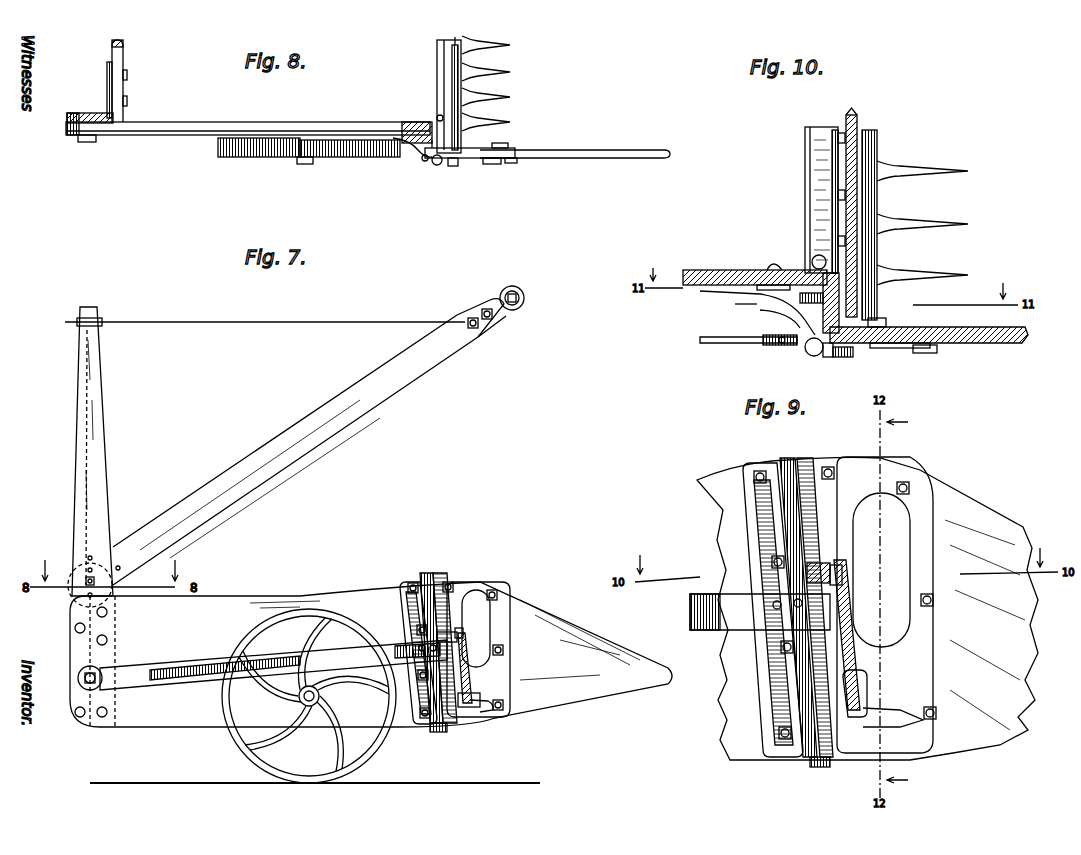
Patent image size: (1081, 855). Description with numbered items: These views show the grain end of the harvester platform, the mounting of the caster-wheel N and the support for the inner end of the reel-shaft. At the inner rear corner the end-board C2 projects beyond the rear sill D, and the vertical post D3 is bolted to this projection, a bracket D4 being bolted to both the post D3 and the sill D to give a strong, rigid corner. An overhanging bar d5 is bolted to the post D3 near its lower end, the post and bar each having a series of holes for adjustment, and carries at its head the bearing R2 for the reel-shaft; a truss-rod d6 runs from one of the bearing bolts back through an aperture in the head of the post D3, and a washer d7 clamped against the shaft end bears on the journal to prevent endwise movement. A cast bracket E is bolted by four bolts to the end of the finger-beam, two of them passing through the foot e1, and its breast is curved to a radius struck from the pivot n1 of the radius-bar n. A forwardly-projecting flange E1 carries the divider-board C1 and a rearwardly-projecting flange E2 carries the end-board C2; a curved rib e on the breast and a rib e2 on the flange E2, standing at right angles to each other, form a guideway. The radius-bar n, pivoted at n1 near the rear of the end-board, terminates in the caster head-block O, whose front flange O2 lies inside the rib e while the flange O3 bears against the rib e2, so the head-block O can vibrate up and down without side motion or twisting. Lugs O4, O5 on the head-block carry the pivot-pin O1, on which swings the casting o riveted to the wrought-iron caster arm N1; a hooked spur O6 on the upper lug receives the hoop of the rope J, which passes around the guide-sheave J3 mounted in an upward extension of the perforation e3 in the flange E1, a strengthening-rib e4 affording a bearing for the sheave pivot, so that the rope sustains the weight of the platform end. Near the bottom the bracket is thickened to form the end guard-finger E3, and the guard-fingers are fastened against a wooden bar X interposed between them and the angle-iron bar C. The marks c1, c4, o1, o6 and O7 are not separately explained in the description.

In FIG. 8, the rear sill D is at (123, 50).
In FIG. 7, the rear sill D is at (118, 690).
In FIG. 8, the vertical post D3 is at (73, 113).
In FIG. 7, the vertical post D3 is at (100, 420).
In FIG. 8, the bracket D4 is at (112, 90).
In FIG. 7, the bracket D4 is at (117, 632).
In FIG. 8, the angle-iron bar C is at (437, 66).
In FIG. 7, the angle-iron bar C is at (452, 724).
In FIG. 10, the angle-iron bar C is at (825, 200).
In FIG. 9, the angle-iron bar C is at (830, 762).
In FIG. 8, the divider-board C1 is at (578, 150).
In FIG. 7, the divider-board C1 is at (580, 640).
In FIG. 10, the divider-board C1 is at (998, 343).
In FIG. 9, the divider-board C1 is at (985, 625).
In FIG. 8, the end-board C2 is at (200, 122).
In FIG. 7, the end-board C2 is at (225, 622).
In FIG. 9, the end-board C2 is at (867, 608).
In FIG. 8, the caster-wheel N is at (255, 158).
In FIG. 7, the caster-wheel N is at (180, 662).
In FIG. 9, the caster-wheel N is at (760, 611).
In FIG. 8, the caster-wheel arm N1 is at (358, 158).
In FIG. 7, the caster-wheel arm N1 is at (395, 650).
In FIG. 8, the radius-bar n is at (176, 142).
In FIG. 9, the radius-bar n is at (690, 605).
In FIG. 8, the radius-bar pivot n1 is at (88, 142).
In FIG. 7, the radius-bar pivot n1 is at (78, 678).
In FIG. 8, the wooden bar X is at (452, 38).
In FIG. 10, the wooden bar X is at (860, 128).
In FIG. 8, the rope J is at (462, 105).
In FIG. 7, the rope J is at (470, 680).
In FIG. 10, the rope J is at (877, 158).
In FIG. 9, the rope J is at (856, 650).
In FIG. 8, the guide-sheave J3 is at (458, 166).
In FIG. 7, the guide-sheave J3 is at (480, 700).
In FIG. 10, the guide-sheave J3 is at (855, 352).
In FIG. 9, the guide-sheave J3 is at (867, 690).
In FIG. 8, the bracket E is at (462, 140).
In FIG. 10, the bracket E is at (840, 272).
In FIG. 8, the forwardly-projecting flange E1 is at (492, 164).
In FIG. 7, the forwardly-projecting flange E1 is at (464, 582).
In FIG. 10, the forwardly-projecting flange E1 is at (918, 348).
In FIG. 9, the forwardly-projecting flange E1 is at (845, 605).
In FIG. 8, the rearwardly-projecting flange E2 is at (402, 126).
In FIG. 7, the rearwardly-projecting flange E2 is at (402, 598).
In FIG. 10, the rearwardly-projecting flange E2 is at (770, 270).
In FIG. 9, the rearwardly-projecting flange E2 is at (773, 610).
In FIG. 8, the end guard-finger E3 is at (512, 163).
In FIG. 10, the end guard-finger E3 is at (945, 327).
In FIG. 8, the curved rib e is at (423, 172).
In FIG. 7, the curved rib e is at (445, 642).
In FIG. 9, the curved rib e is at (802, 458).
In FIG. 7, the foot e1 is at (434, 732).
In FIG. 10, the foot e1 is at (818, 255).
In FIG. 9, the foot e1 is at (808, 760).
In FIG. 7, the rib e2 is at (428, 573).
In FIG. 9, the rib e2 is at (783, 458).
In FIG. 7, the perforation e3 is at (492, 712).
In FIG. 9, the perforation e3 is at (893, 717).
In FIG. 10, the strengthening-rib e4 is at (886, 322).
In FIG. 8, the bolt c1 is at (437, 116).
In FIG. 8, the bolt c4 is at (502, 143).
In FIG. 8, the caster head-block O is at (414, 152).
In FIG. 7, the caster head-block O is at (437, 636).
In FIG. 10, the caster head-block O is at (755, 310).
In FIG. 9, the caster head-block O is at (807, 580).
In FIG. 8, the pivot-pin O1 is at (437, 166).
In FIG. 7, the pivot-pin O1 is at (448, 580).
In FIG. 10, the pivot-pin O1 is at (808, 356).
In FIG. 9, the pivot-pin O1 is at (826, 563).
In FIG. 10, the projecting flange O2 is at (823, 302).
In FIG. 10, the flange O3 is at (777, 258).
In FIG. 8, the upper lug O4 is at (428, 160).
In FIG. 7, the upper lug O4 is at (498, 636).
In FIG. 10, the upper lug O4 is at (778, 345).
In FIG. 7, the lower lug O5 is at (485, 646).
In FIG. 9, the lower lug O5 is at (848, 615).
In FIG. 8, the hooked spur O6 is at (470, 160).
In FIG. 7, the hooked spur O6 is at (463, 634).
In FIG. 10, the hooked spur O6 is at (840, 358).
In FIG. 9, the hooked spur O6 is at (860, 566).
In FIG. 9, the pin O7 is at (848, 578).
In FIG. 7, the casting o is at (422, 652).
In FIG. 10, the casting o is at (779, 342).
In FIG. 9, the casting o is at (780, 612).
In FIG. 10, the pin o1 is at (773, 320).
In FIG. 8, the pin o6 is at (419, 164).
In FIG. 7, the overhanging bar d5 is at (396, 388).
In FIG. 7, the truss-rod d6 is at (350, 323).
In FIG. 7, the washer d7 is at (524, 298).
In FIG. 7, the bearing R2 is at (512, 315).